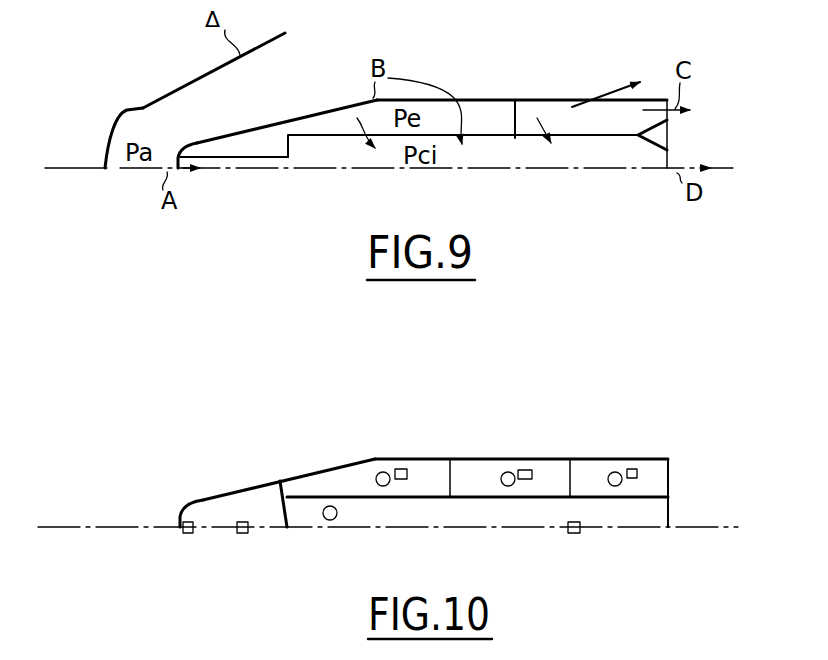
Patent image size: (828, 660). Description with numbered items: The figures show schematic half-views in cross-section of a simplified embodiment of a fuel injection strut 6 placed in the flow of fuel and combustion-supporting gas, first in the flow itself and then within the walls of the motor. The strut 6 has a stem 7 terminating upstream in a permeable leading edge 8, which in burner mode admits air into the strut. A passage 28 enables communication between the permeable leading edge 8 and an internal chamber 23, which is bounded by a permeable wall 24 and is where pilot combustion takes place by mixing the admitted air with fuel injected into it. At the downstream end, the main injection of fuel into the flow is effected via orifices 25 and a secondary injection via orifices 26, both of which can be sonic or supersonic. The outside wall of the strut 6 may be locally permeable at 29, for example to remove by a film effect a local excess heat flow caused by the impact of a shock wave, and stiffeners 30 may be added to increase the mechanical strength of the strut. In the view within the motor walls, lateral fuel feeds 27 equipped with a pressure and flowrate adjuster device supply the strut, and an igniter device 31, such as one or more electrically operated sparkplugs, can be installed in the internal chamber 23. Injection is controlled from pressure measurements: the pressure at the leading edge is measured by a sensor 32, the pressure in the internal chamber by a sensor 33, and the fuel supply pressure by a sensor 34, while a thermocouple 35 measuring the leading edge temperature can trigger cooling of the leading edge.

In FIG. 9, the injection strut 6 is at (469, 92).
In FIG. 10, the injection strut 6 is at (468, 452).
In FIG. 9, the stem 7 is at (285, 117).
In FIG. 10, the stem 7 is at (298, 477).
In FIG. 9, the permeable leading edge 8 is at (178, 154).
In FIG. 10, the permeable leading edge 8 is at (177, 520).
In FIG. 9, the internal chamber 23 is at (490, 147).
In FIG. 10, the internal chamber 23 is at (468, 515).
In FIG. 9, the permeable wall 24 is at (328, 138).
In FIG. 9, the orifices 25 is at (653, 157).
In FIG. 9, the orifices 26 is at (643, 118).
In FIG. 10, the fuel feeds 27 is at (377, 472).
In FIG. 9, the passage 28 is at (252, 160).
In FIG. 9, the locally permeable outside wall 29 is at (562, 100).
In FIG. 9, the stiffeners 30 is at (516, 112).
In FIG. 10, the igniter device 31 is at (333, 520).
In FIG. 10, the sensor 32 is at (243, 535).
In FIG. 10, the sensor 33 is at (577, 534).
In FIG. 10, the sensor 34 is at (400, 468).
In FIG. 10, the thermocouple 35 is at (187, 535).